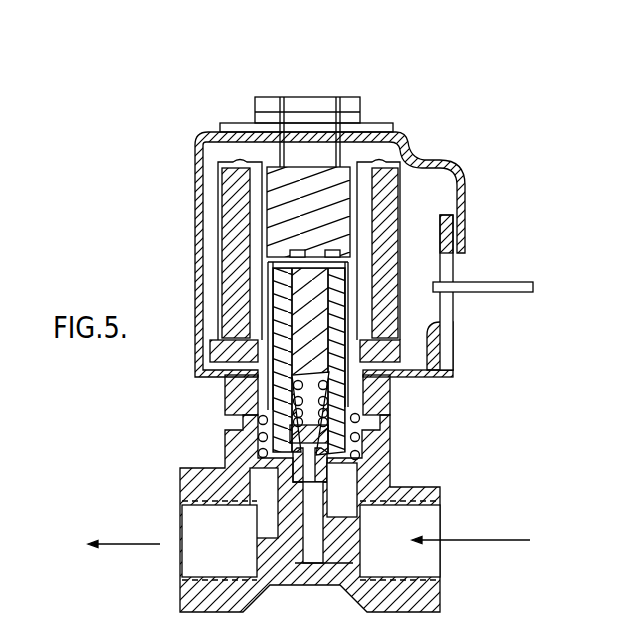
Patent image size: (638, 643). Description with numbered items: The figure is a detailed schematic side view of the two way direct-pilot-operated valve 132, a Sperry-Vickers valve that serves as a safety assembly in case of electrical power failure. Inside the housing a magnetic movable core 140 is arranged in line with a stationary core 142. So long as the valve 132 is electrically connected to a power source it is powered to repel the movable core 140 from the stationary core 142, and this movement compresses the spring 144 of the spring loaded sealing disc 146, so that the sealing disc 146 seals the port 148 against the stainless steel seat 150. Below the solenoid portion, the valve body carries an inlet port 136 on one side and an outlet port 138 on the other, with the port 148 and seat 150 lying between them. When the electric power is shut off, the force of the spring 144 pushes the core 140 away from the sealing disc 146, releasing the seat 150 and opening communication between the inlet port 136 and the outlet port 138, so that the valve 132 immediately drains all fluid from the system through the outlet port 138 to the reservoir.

The two way direct-pilot-operated valve 132 is at (160, 165).
The stationary core 142 is at (313, 150).
The magnetic movable core 140 is at (328, 372).
The spring 144 is at (330, 386).
The spring loaded sealing disc 146 is at (363, 410).
The outlet port 138 is at (203, 547).
The inlet port 136 is at (423, 557).
The port 148 is at (323, 482).
The stainless steel seat 150 is at (303, 482).